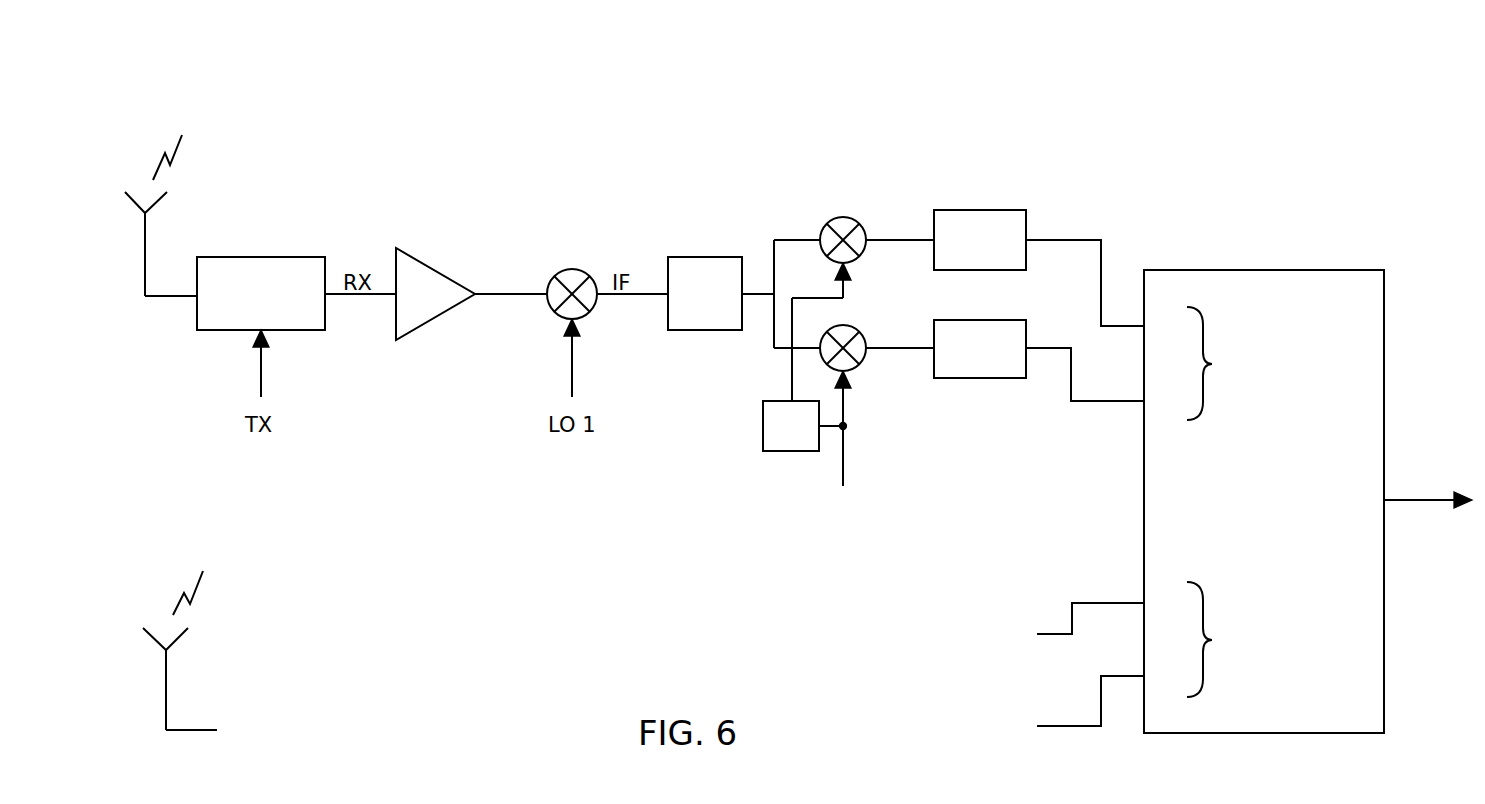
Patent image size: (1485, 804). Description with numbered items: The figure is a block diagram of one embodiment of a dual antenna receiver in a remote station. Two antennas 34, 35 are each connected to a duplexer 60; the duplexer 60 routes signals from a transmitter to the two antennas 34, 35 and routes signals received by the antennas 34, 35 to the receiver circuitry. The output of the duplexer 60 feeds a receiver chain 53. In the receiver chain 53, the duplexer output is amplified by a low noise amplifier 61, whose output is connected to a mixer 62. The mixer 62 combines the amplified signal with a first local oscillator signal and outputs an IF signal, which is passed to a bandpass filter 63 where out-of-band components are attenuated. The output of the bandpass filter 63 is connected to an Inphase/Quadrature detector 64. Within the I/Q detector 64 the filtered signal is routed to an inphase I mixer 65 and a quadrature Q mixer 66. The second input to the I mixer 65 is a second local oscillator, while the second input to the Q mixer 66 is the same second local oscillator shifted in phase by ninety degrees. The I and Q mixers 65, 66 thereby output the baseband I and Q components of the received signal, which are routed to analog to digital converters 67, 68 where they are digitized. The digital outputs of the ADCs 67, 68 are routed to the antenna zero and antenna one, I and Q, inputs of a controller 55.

The antenna 34 is at (184, 296).
The antenna 35 is at (186, 730).
The receiver chain 53 is at (750, 61).
The controller 55 is at (1297, 270).
The duplexer 60 is at (266, 257).
The low noise amplifier 61 is at (427, 264).
The mixer 62 is at (573, 268).
The bandpass filter 63 is at (694, 257).
The I/Q detector 64 is at (834, 294).
The I mixer 65 is at (853, 326).
The Q mixer 66 is at (846, 217).
The analog to digital converter 67 is at (975, 320).
The analog to digital converter 68 is at (975, 210).